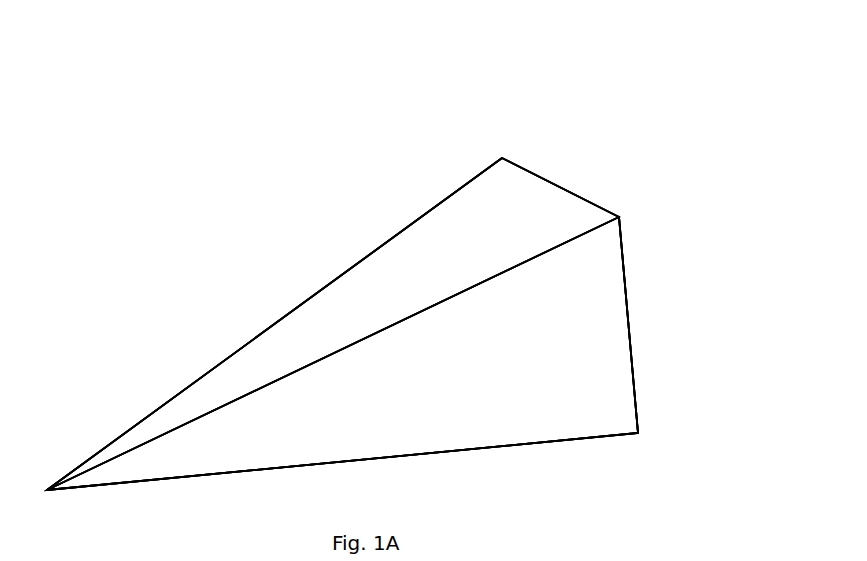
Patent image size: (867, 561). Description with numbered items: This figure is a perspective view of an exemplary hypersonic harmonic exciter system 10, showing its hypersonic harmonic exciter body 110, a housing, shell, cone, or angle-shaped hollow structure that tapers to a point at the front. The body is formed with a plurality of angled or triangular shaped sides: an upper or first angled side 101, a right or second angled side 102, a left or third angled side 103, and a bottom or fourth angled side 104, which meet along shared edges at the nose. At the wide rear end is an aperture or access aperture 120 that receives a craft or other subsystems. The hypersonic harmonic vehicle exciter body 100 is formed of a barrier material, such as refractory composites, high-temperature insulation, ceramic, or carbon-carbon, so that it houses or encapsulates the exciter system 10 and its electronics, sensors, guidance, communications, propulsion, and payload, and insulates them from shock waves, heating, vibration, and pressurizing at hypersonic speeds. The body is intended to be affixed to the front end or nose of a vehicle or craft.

The hypersonic harmonic exciter system 10 is at (342, 263).
The hypersonic harmonic exciter body 110 is at (246, 197).
The hypersonic harmonic vehicle exciter body 100 is at (387, 283).
The first angled side 101 is at (522, 195).
The second angled side 102 is at (609, 335).
The third angled side 103 is at (318, 327).
The fourth angled side 104 is at (464, 407).
The access aperture 120 is at (591, 383).